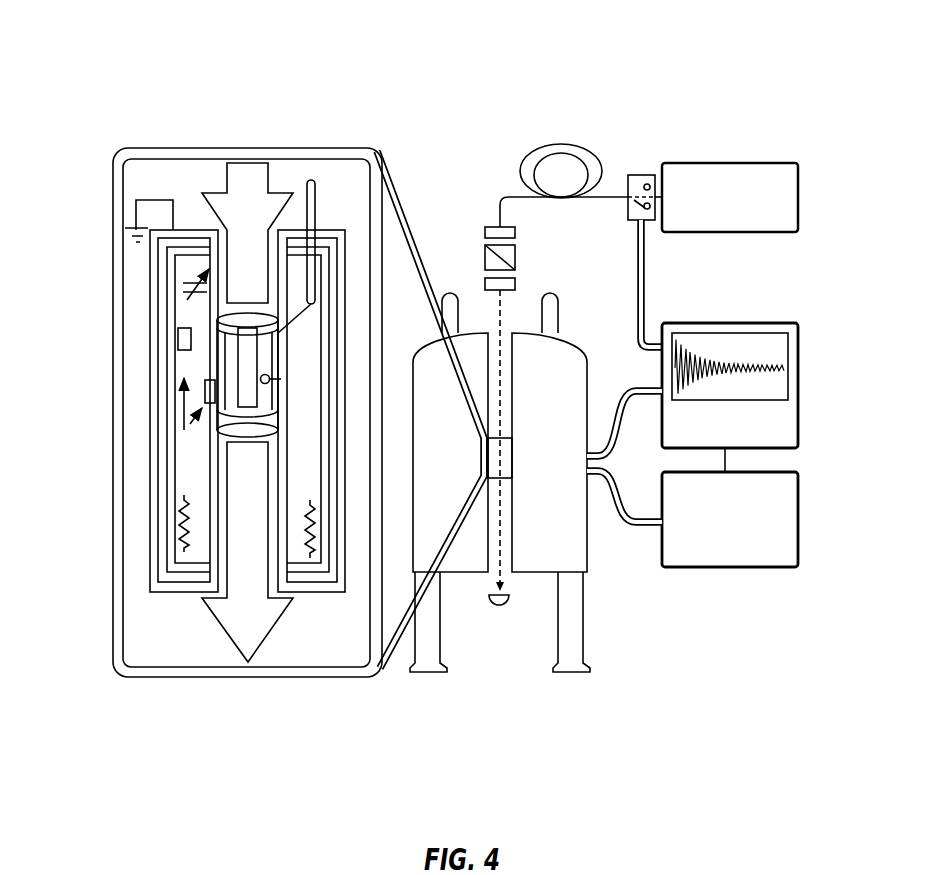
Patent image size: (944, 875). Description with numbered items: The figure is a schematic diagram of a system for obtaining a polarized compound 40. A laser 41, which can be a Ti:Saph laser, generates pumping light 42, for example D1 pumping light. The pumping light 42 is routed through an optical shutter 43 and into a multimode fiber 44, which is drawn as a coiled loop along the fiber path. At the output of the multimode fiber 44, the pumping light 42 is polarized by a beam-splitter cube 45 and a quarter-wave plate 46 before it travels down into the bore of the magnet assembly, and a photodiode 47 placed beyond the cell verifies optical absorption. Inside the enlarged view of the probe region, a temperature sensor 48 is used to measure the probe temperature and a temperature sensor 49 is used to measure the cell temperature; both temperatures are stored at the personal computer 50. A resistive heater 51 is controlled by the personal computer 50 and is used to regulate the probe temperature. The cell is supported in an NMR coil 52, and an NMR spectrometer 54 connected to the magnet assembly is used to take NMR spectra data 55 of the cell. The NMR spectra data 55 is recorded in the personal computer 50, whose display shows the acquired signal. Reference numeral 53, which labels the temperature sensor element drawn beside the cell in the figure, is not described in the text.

The system for obtaining a polarized compound 40 is at (70, 60).
The laser 41 is at (753, 165).
The pumping light 42 is at (497, 222).
The optical shutter 43 is at (635, 150).
The multimode fiber 44 is at (550, 145).
The beam-splitter cube 45 is at (500, 205).
The quarter-wave plate 46 is at (483, 284).
The photodiode 47 is at (499, 606).
The temperature sensor 48 is at (160, 482).
The temperature sensor 49 is at (186, 404).
The personal computer 50 is at (800, 376).
The resistive heater 51 is at (178, 542).
The NMR coil 52 is at (218, 330).
The temperature sensor 53 is at (182, 368).
The NMR spectrometer 54 is at (598, 570).
The NMR spectra data 55 is at (612, 487).